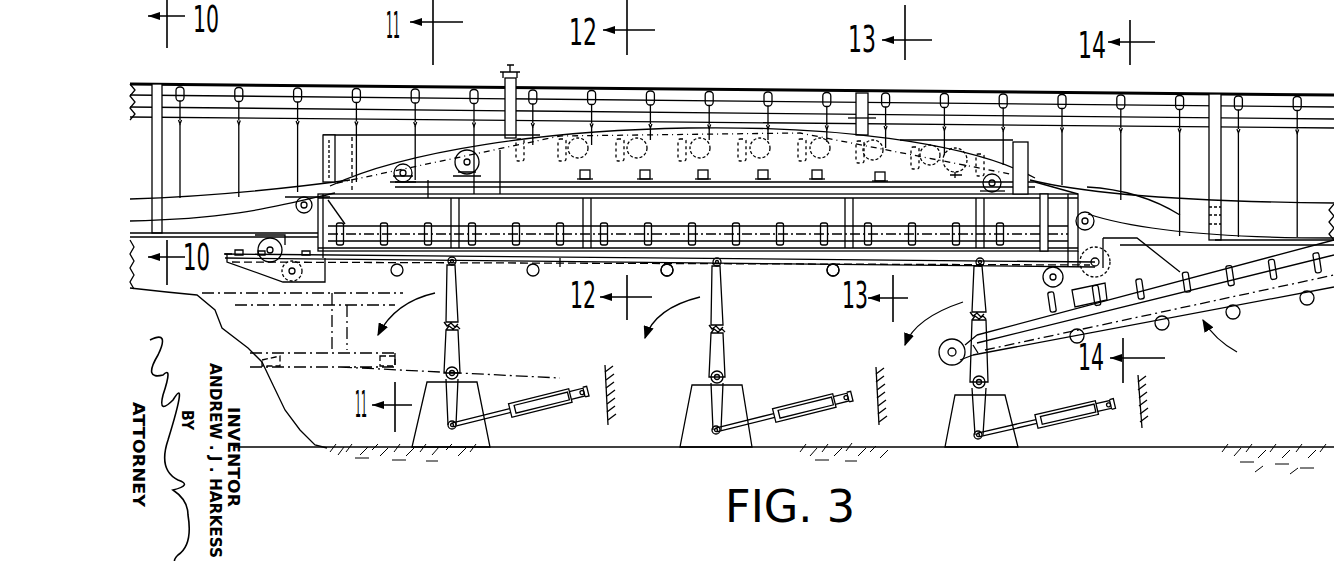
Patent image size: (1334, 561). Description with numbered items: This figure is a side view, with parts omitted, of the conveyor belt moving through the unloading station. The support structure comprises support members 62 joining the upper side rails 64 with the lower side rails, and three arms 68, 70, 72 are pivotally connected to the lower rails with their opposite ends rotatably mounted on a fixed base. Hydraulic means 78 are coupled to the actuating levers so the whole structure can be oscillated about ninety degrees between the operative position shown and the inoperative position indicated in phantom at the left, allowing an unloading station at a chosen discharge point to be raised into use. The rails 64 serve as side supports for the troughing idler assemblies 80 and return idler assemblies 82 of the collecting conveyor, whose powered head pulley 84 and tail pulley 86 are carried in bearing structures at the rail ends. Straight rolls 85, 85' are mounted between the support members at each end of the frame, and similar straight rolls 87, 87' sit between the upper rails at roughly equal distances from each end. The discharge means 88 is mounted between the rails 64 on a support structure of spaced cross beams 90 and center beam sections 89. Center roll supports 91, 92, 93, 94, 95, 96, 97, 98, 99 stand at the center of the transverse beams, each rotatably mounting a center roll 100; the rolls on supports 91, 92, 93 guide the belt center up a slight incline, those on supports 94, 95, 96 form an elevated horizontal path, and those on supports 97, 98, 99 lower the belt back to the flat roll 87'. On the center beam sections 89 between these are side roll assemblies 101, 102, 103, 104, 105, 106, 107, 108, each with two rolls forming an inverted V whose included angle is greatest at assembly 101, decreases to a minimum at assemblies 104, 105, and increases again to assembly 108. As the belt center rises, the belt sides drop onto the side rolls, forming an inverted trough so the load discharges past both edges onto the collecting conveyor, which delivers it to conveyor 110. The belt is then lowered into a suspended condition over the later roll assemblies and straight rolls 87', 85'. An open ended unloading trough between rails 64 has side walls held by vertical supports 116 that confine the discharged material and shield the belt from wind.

The support members 62 is at (578, 263).
The upper side rails 64 is at (428, 195).
The arm 68 is at (460, 290).
The arm 70 is at (723, 297).
The arm 72 is at (974, 288).
The hydraulic means 78 is at (560, 398).
The troughing idler assemblies 80 is at (750, 212).
The return idler assemblies 82 is at (666, 278).
The powered head pulley 84 is at (1105, 264).
The straight roll 85 is at (289, 185).
The straight roll 85' is at (1096, 197).
The tail pulley 86 is at (259, 246).
The straight roll 87 is at (369, 162).
The straight roll 87' is at (1023, 222).
The discharge means 88 is at (922, 137).
The center beam sections 89 is at (866, 204).
The cross beams 90 is at (908, 195).
The center roll support 91 is at (474, 195).
The center roll support 92 is at (518, 195).
The center roll support 93 is at (600, 188).
The center roll support 94 is at (645, 188).
The center roll support 95 is at (735, 188).
The center roll support 96 is at (780, 188).
The center roll support 97 is at (822, 188).
The center roll support 98 is at (882, 195).
The center roll support 99 is at (940, 195).
The center roll 100 is at (463, 152).
The side roll assembly 101 is at (500, 195).
The side roll assembly 102 is at (562, 122).
The side roll assembly 103 is at (605, 122).
The side roll assembly 104 is at (682, 122).
The side roll assembly 105 is at (740, 125).
The side roll assembly 106 is at (796, 125).
The side roll assembly 107 is at (842, 128).
The side roll assembly 108 is at (937, 92).
The conveyor 110 is at (1136, 303).
The vertical supports 116 is at (1020, 172).